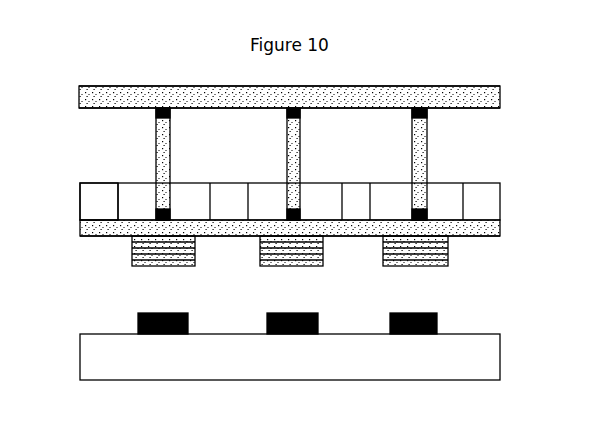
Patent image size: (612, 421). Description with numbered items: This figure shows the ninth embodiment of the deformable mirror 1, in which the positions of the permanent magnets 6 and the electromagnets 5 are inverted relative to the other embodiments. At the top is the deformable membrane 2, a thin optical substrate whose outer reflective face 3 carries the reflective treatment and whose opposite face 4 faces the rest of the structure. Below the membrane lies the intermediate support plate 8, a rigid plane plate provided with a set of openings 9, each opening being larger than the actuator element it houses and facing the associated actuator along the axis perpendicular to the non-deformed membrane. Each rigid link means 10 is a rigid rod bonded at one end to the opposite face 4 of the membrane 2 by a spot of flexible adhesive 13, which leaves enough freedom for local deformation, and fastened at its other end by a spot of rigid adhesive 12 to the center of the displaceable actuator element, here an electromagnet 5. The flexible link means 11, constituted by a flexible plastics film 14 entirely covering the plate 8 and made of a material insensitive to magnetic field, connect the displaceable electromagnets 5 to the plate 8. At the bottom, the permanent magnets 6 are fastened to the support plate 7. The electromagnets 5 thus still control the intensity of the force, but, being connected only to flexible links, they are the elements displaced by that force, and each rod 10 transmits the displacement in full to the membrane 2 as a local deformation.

The deformable mirror 1 is at (301, 151).
The deformable membrane 2 is at (317, 98).
The reflective face 3 is at (468, 86).
The opposite face 4 is at (468, 108).
The control element 5 is at (162, 254).
The deformation element 6 is at (156, 334).
The support plate 7 is at (493, 348).
The intermediate support plate 8 is at (515, 204).
The openings 9 is at (133, 192).
The rigid link means 10 is at (156, 143).
The flexible link means 11 is at (333, 234).
The spot of rigid adhesive 12 is at (167, 215).
The spot of flexible adhesive 13 is at (158, 108).
The flexible plastics film 14 is at (478, 234).